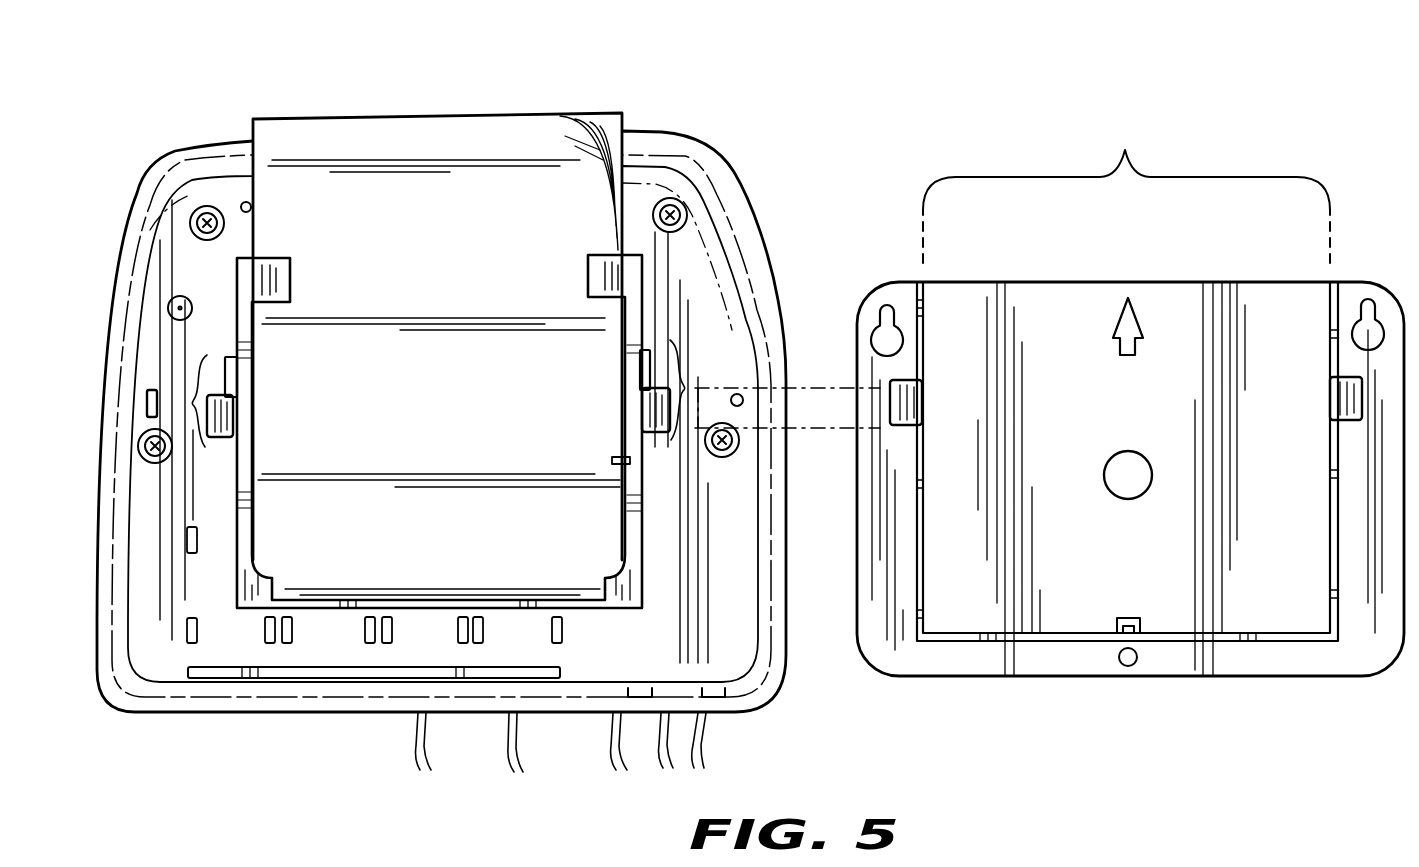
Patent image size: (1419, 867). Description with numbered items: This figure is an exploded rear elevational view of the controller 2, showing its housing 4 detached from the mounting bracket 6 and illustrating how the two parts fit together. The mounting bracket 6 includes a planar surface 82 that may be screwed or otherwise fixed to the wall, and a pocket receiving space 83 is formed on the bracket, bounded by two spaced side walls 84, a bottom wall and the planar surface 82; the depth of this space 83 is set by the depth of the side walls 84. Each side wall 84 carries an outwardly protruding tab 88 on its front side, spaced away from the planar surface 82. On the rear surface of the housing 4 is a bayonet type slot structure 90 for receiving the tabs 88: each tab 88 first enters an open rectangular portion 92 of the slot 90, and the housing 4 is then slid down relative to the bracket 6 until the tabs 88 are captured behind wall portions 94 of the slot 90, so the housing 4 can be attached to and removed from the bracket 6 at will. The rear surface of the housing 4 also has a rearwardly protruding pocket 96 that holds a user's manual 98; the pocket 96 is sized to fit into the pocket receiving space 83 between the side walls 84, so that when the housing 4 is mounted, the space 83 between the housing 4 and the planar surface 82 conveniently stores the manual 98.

The controller 2 is at (457, 404).
The housing 4 is at (656, 178).
The mounting bracket 6 is at (1055, 396).
The planar surface 82 is at (1268, 292).
The pocket receiving space 83 is at (1163, 274).
The side walls 84 is at (925, 296).
The tab 88 is at (906, 404).
The bayonet type slot structure 90 is at (436, 383).
The open rectangular portion 92 is at (234, 410).
The wall portions 94 is at (708, 328).
The pocket 96 is at (628, 277).
The user's manual 98 is at (458, 266).